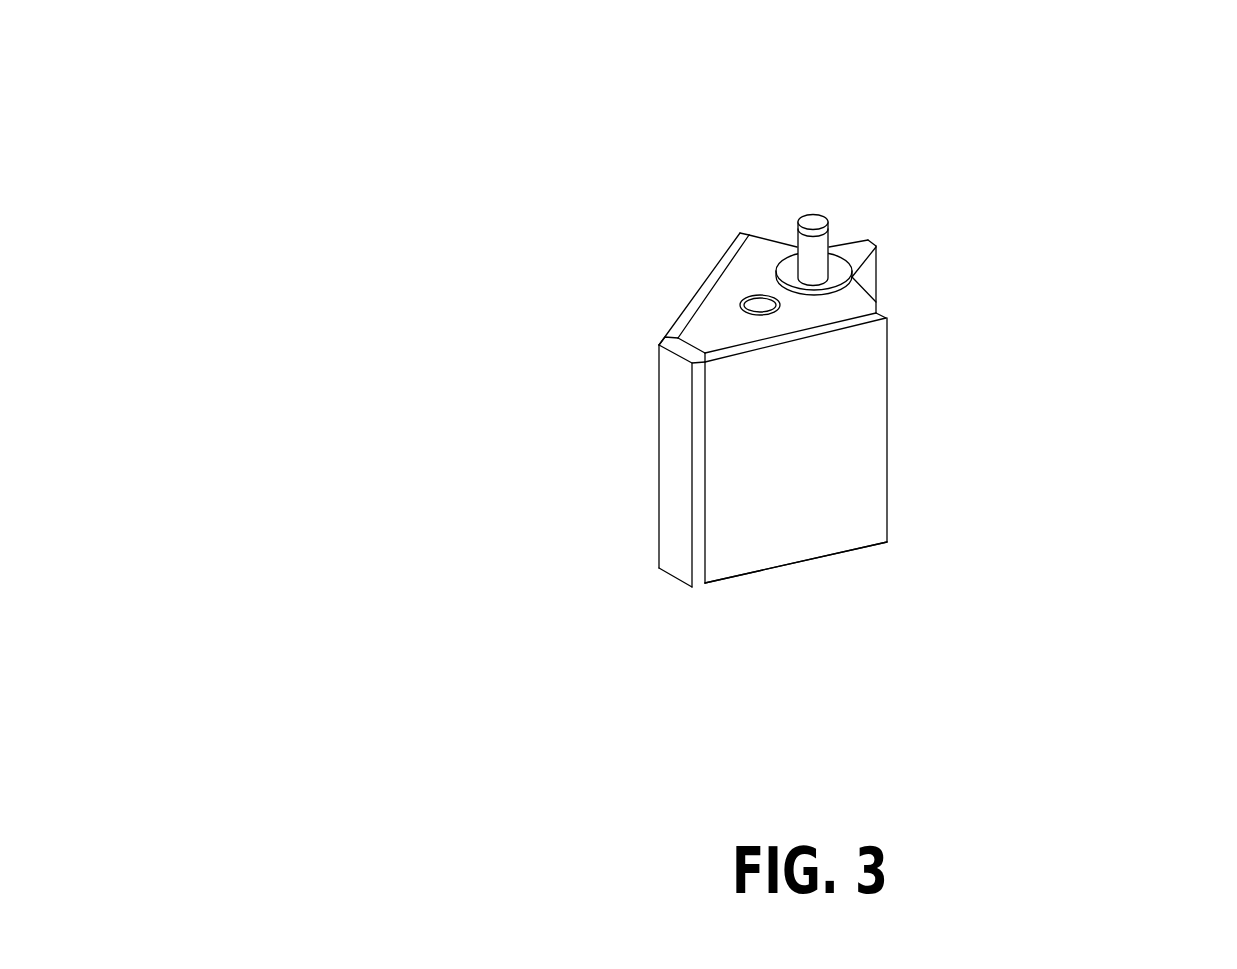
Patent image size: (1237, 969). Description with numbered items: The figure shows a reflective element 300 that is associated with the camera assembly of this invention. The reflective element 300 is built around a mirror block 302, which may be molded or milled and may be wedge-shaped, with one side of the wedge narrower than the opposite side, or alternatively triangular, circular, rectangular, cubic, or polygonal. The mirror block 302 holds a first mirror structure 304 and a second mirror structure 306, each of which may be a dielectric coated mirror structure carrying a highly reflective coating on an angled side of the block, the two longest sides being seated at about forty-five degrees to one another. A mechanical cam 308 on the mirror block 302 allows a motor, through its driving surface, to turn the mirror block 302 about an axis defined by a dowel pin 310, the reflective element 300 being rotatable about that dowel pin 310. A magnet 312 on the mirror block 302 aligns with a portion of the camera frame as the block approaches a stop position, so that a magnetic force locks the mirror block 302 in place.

The reflective element 300 is at (215, 66).
The mirror block 302 is at (432, 695).
The first mirror structure 304 is at (522, 175).
The second mirror structure 306 is at (787, 530).
The mechanical cam 308 is at (1097, 264).
The dowel pin 310 is at (1143, 479).
The magnet 312 is at (970, 175).